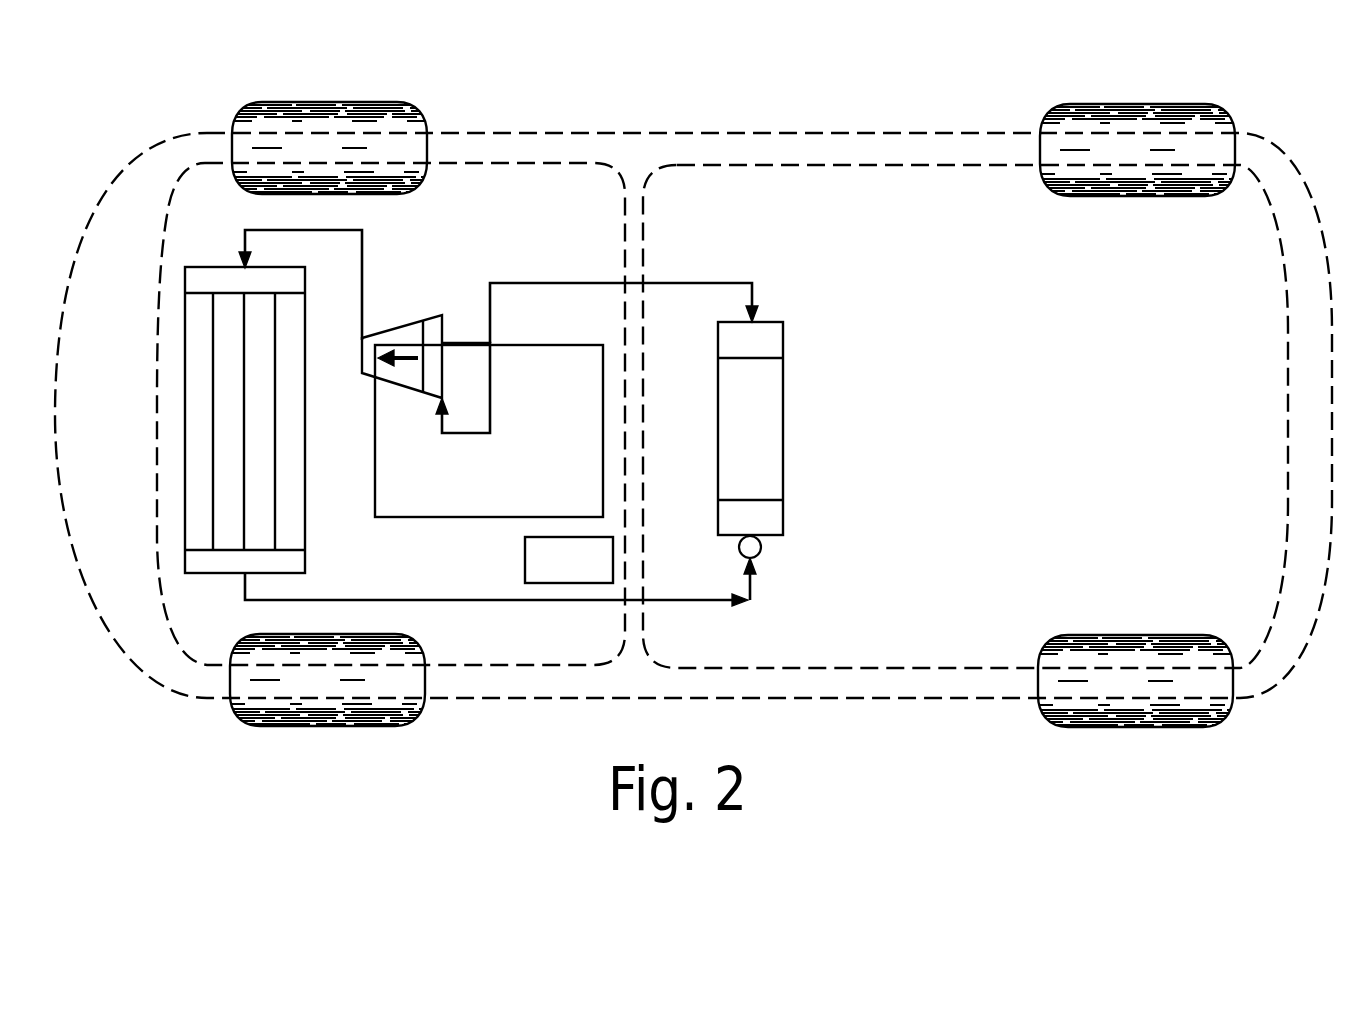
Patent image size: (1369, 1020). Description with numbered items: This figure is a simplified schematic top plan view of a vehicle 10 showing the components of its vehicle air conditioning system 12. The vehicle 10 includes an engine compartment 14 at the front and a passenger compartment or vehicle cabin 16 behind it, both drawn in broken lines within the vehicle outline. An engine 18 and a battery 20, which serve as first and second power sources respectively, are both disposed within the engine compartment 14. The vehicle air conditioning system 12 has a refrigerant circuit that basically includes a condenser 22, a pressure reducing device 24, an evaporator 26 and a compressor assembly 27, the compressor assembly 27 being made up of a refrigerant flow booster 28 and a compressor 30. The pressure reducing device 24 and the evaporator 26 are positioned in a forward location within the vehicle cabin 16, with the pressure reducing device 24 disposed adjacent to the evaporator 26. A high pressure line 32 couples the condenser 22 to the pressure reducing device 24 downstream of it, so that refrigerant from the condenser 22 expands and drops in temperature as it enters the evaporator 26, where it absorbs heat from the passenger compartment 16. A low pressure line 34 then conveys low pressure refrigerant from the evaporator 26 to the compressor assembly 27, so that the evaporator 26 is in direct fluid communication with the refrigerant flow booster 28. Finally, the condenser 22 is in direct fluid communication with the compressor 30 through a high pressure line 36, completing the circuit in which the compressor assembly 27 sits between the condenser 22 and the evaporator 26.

The vehicle 10 is at (846, 83).
The vehicle air conditioning system 12 is at (533, 240).
The engine compartment 14 is at (480, 165).
The passenger compartment 16 is at (935, 165).
The engine 18 is at (410, 517).
The battery 20 is at (502, 563).
The condenser 22 is at (192, 368).
The pressure reducing device 24 is at (753, 549).
The evaporator 26 is at (760, 430).
The compressor assembly 27 is at (406, 312).
The refrigerant flow booster 28 is at (435, 327).
The compressor 30 is at (377, 343).
The high pressure line 32 is at (482, 603).
The low pressure line 34 is at (667, 283).
The high pressure line 36 is at (302, 224).